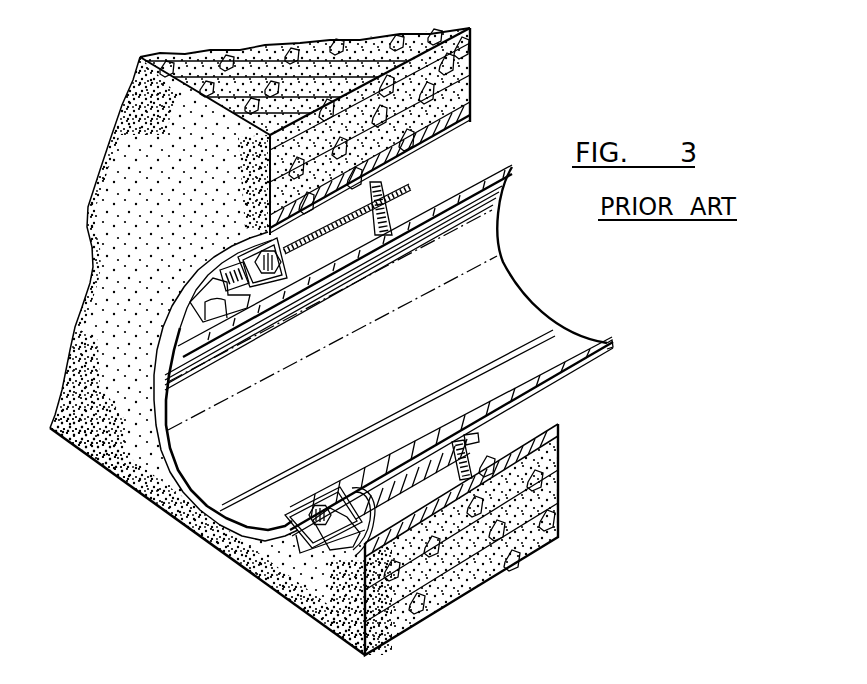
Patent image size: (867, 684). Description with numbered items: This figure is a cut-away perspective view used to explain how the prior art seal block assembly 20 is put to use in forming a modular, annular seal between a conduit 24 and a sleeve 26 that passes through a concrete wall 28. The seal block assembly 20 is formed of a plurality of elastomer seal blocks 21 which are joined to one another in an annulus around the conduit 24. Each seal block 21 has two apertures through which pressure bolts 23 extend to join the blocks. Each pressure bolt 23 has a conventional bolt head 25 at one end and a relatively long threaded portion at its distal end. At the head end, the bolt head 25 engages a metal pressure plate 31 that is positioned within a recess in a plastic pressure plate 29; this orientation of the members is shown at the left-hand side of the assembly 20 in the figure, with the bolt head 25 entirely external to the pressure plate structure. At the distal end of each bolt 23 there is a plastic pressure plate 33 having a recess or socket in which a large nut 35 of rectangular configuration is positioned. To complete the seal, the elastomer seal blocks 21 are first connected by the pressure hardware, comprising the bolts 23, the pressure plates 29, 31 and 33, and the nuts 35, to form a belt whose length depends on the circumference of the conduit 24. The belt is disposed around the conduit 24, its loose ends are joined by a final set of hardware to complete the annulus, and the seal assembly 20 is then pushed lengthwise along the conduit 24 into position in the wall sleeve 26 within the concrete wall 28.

The seal block assembly 20 is at (305, 553).
The elastomer seal block 21 is at (342, 235).
The pressure bolt 23 is at (395, 200).
The conduit 24 is at (349, 395).
The bolt head 25 is at (258, 264).
The sleeve 26 is at (397, 210).
The concrete wall 28 is at (540, 488).
The plastic pressure plate 29 is at (232, 299).
The metal pressure plate 31 is at (250, 254).
The plastic pressure plate 33 is at (407, 227).
The nut 35 is at (405, 205).